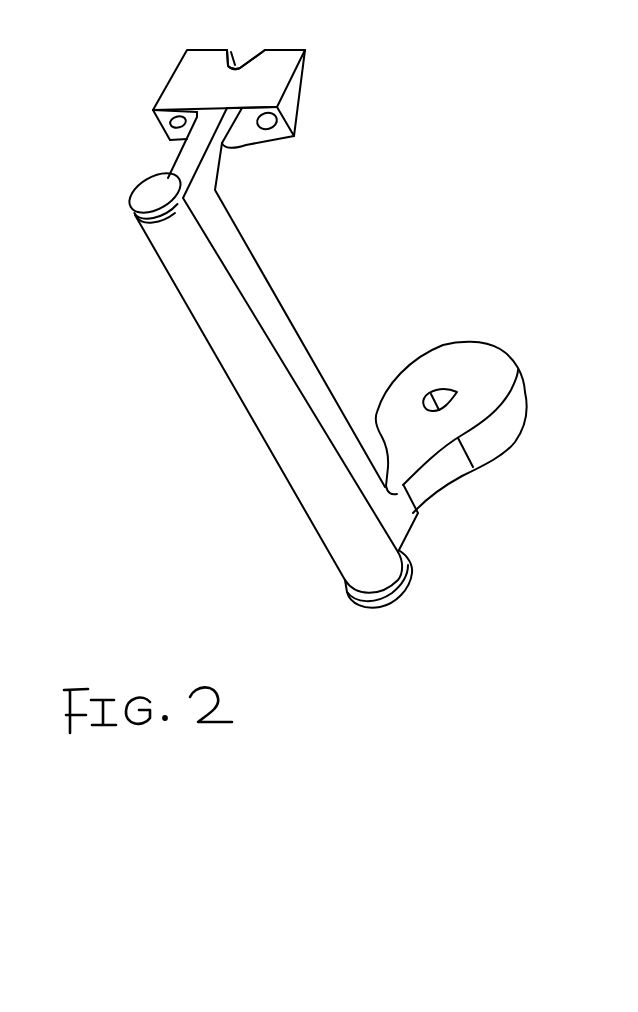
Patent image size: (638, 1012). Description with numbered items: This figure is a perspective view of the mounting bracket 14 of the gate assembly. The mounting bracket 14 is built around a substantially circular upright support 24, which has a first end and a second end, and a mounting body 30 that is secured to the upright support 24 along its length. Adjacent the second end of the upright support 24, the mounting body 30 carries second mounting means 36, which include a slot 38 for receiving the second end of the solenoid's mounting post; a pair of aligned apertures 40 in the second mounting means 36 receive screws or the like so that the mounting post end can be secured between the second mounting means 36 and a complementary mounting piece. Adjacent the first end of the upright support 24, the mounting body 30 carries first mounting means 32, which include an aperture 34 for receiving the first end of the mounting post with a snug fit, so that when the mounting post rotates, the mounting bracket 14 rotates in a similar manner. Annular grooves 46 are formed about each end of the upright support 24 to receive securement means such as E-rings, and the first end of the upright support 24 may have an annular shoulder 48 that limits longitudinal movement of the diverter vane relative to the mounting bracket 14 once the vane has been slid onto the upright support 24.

The mounting bracket 14 is at (150, 280).
The upright support 24 is at (228, 343).
The mounting body 30 is at (263, 295).
The first mounting means 32 is at (490, 325).
The aperture 34 is at (457, 390).
The second mounting means 36 is at (330, 99).
The slot 38 is at (240, 62).
The aligned apertures 40 is at (158, 123).
The annular grooves 46 is at (128, 218).
The annular shoulder 48 is at (400, 588).